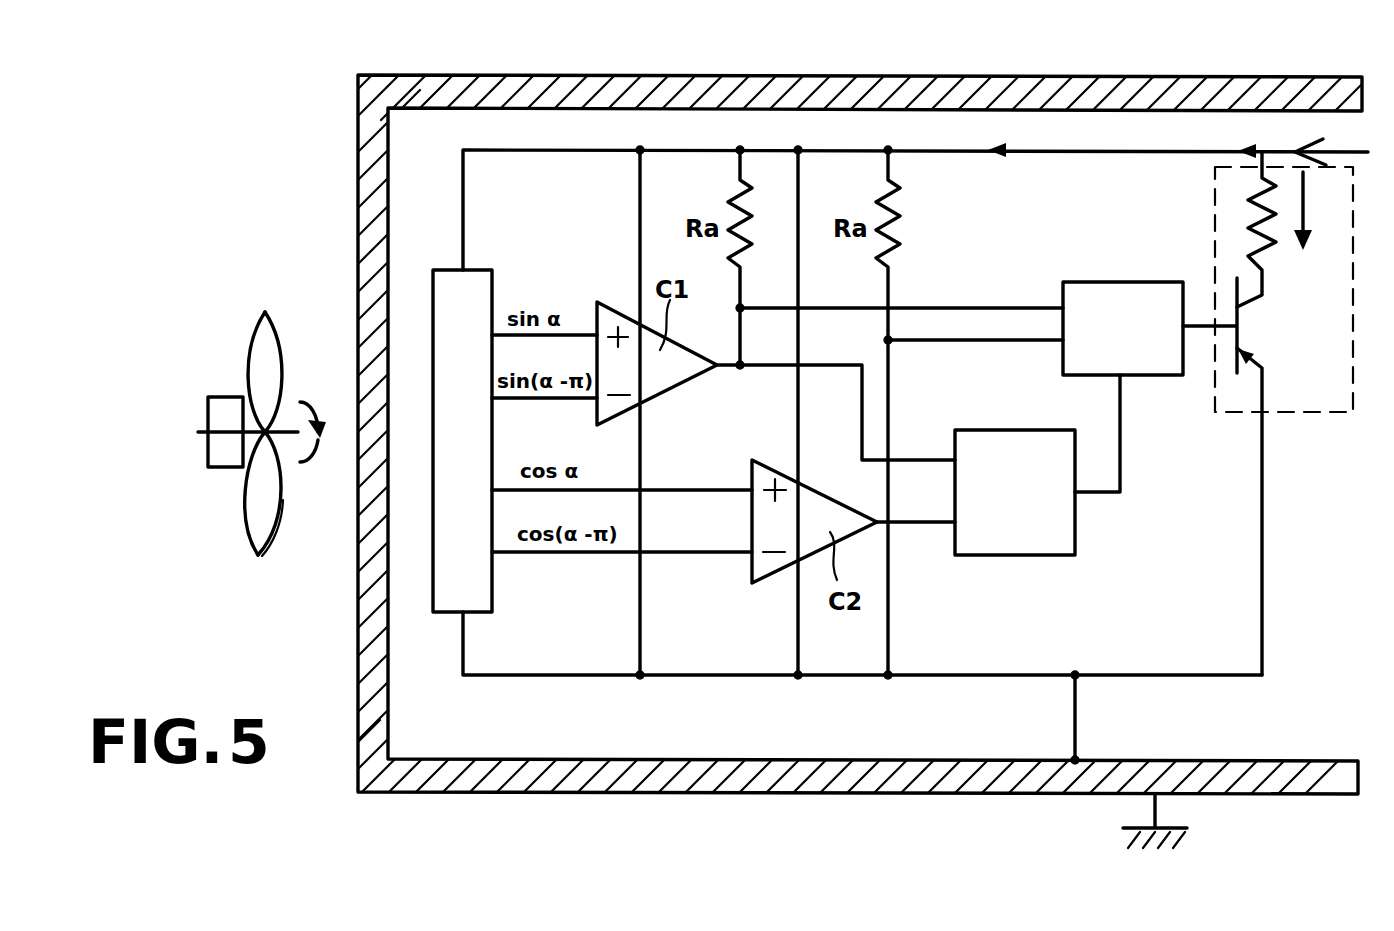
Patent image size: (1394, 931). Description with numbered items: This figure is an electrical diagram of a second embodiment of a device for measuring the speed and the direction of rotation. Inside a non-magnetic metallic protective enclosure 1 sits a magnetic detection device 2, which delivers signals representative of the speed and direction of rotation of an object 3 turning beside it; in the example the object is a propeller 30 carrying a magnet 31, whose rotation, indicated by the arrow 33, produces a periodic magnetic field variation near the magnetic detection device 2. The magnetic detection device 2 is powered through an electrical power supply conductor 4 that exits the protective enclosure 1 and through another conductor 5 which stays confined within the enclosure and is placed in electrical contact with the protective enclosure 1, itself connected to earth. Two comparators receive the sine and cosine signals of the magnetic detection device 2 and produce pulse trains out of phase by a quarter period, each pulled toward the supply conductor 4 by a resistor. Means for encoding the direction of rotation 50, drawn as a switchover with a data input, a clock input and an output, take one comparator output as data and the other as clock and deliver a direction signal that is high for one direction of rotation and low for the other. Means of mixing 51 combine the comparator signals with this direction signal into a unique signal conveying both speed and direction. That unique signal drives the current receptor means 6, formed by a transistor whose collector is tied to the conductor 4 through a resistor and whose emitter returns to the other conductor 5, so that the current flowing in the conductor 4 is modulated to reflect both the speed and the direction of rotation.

The protective enclosure 1 is at (493, 792).
The magnetic detection device 2 is at (478, 575).
The object 3 is at (278, 557).
The electrical power supply conductor 4 is at (1053, 153).
The other electrical conductor 5 is at (760, 678).
The current receptor means 6 is at (1310, 410).
The propeller 30 is at (258, 543).
The magnet 31 is at (212, 467).
The rotation direction 33 is at (284, 418).
The means for encoding the direction of rotation 50 is at (1008, 555).
The means of mixing 51 is at (1152, 287).